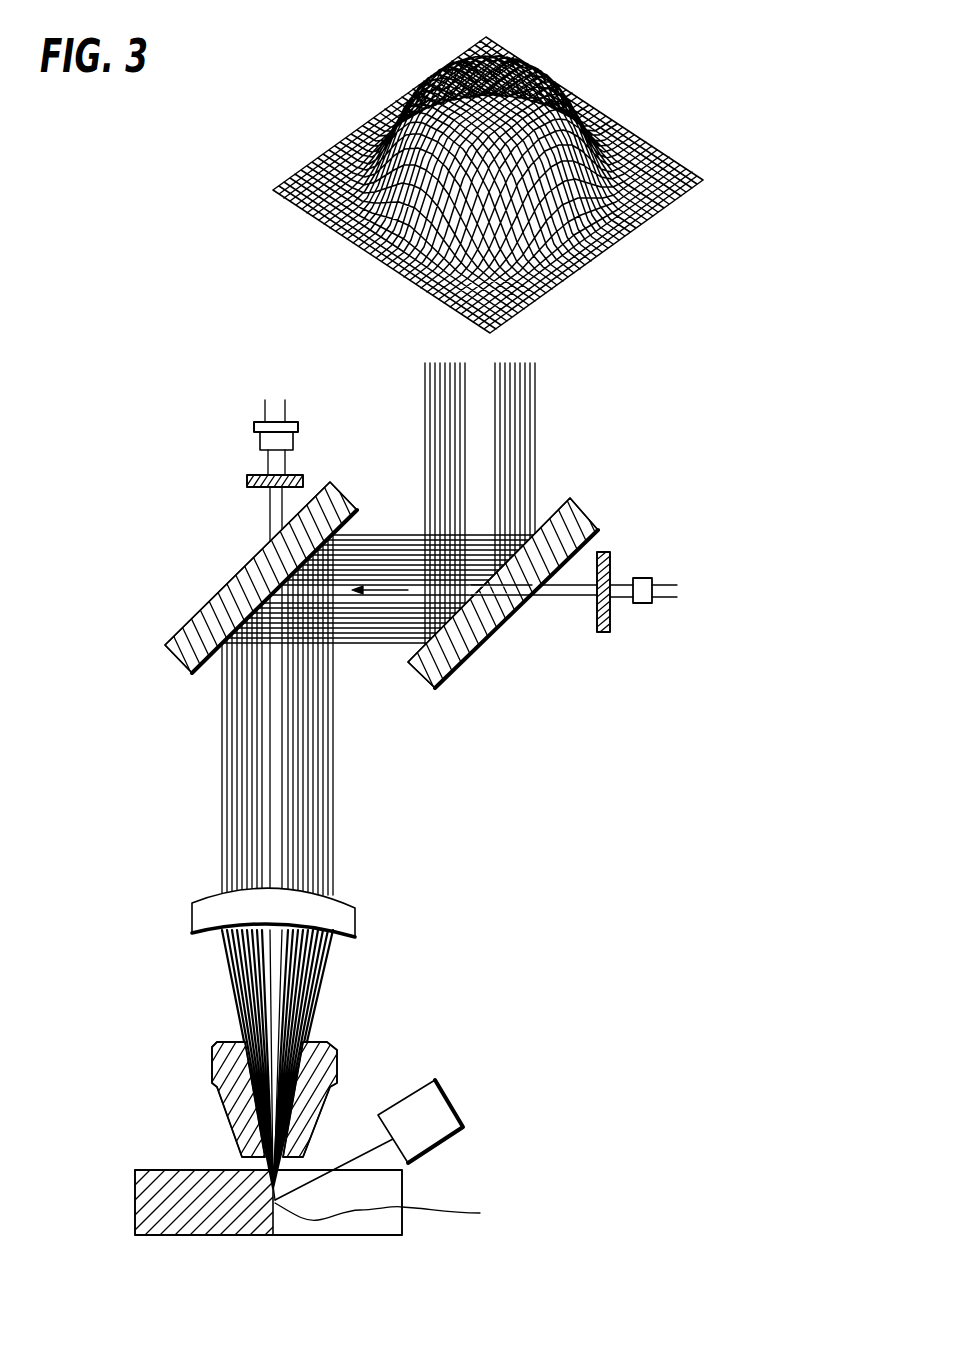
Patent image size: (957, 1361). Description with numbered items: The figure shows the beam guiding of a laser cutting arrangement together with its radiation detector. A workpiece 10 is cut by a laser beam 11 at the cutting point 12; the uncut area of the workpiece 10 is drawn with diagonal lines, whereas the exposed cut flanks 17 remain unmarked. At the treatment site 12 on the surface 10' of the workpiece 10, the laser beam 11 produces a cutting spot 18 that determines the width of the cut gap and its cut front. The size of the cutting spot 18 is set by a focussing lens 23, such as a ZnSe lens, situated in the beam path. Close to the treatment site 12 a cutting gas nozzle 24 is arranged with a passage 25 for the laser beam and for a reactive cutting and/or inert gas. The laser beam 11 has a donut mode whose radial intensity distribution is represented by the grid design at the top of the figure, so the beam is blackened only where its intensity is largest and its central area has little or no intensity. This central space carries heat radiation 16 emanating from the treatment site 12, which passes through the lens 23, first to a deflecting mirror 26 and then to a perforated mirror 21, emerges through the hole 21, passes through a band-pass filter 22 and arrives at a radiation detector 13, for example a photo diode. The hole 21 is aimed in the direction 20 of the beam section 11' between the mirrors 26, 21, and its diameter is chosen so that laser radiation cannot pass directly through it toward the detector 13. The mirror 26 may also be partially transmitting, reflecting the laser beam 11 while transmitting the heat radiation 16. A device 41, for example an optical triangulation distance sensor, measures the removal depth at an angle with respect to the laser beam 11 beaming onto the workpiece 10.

The workpiece 10 is at (374, 1217).
The surface of the workpiece 10' is at (204, 1143).
The laser beam 11 is at (497, 498).
The beam section 11' is at (378, 554).
The cutting point 12 is at (276, 1242).
The radiation detector 13 is at (252, 424).
The heat radiation 16 is at (277, 797).
The cut flanks 17 is at (357, 1223).
The cutting spot 18 is at (282, 1181).
The direction 20 is at (392, 624).
The perforated mirror 21 is at (530, 599).
The band-pass filter 22 is at (248, 480).
The focussing lens 23 is at (355, 923).
The cutting gas nozzle 24 is at (337, 1077).
The passage 25 is at (300, 1043).
The deflecting mirror 26 is at (257, 572).
The device 41 is at (450, 1108).